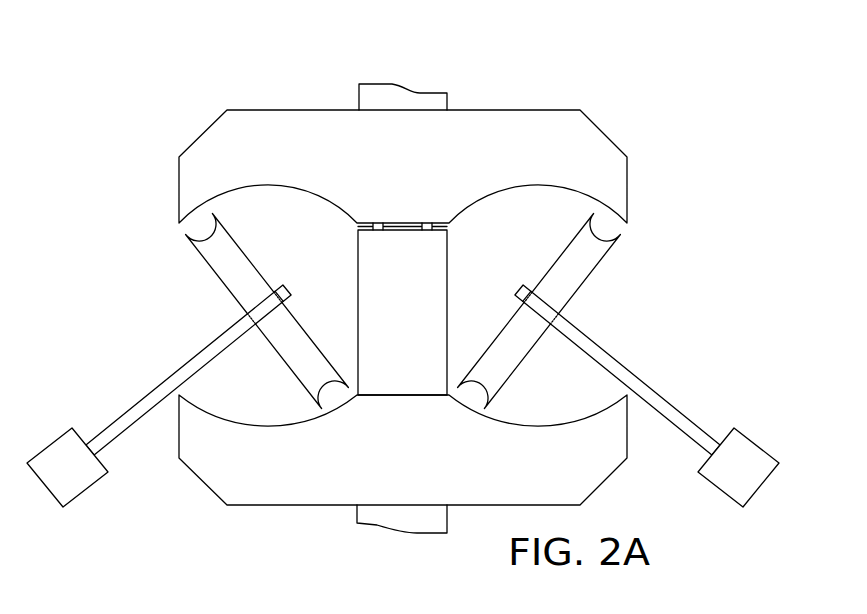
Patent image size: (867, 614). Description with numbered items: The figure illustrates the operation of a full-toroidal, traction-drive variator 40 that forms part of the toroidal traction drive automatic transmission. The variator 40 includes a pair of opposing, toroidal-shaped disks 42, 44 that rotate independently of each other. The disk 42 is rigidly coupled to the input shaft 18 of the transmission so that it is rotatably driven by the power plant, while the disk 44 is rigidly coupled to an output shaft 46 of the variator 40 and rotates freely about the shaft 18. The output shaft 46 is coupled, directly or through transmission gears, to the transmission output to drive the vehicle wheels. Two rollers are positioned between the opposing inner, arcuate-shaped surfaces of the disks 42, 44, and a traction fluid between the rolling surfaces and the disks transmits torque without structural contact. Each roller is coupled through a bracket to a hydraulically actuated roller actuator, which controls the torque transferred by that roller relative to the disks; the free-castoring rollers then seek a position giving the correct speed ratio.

The variator 40 is at (682, 145).
The toroidal-shaped disk 44 is at (528, 109).
The output shaft 46 is at (391, 84).
The toroidal-shaped disk 42 is at (252, 506).
The input shaft 18 is at (412, 535).